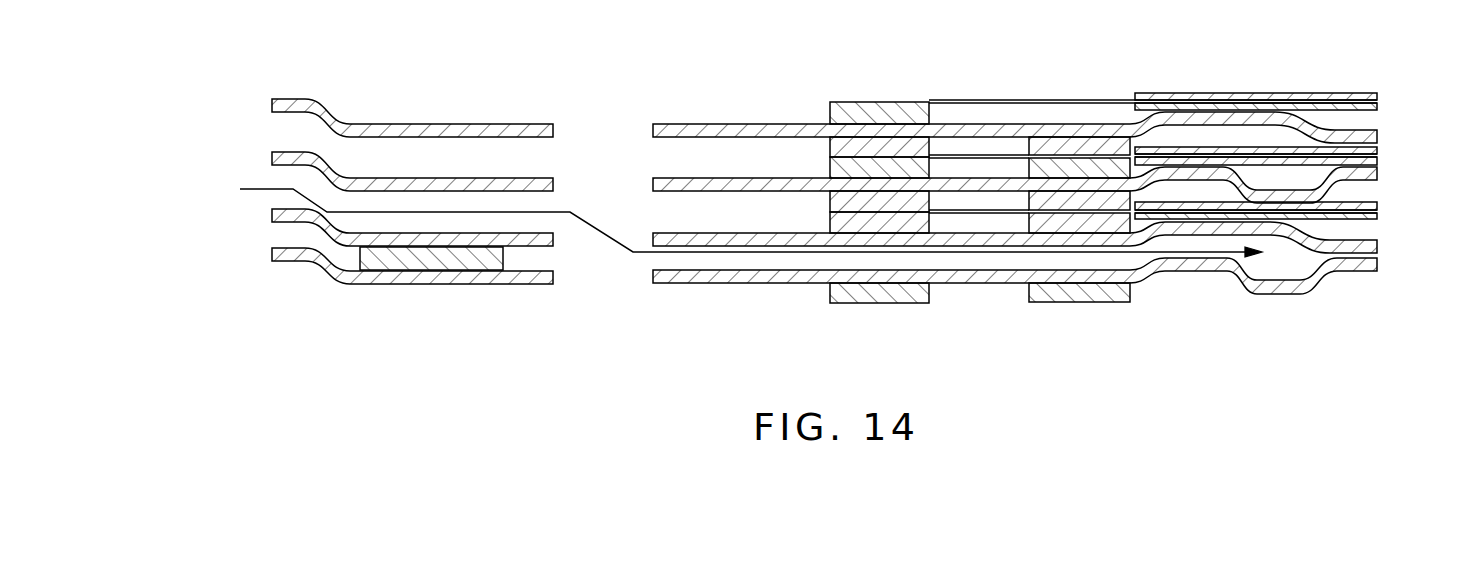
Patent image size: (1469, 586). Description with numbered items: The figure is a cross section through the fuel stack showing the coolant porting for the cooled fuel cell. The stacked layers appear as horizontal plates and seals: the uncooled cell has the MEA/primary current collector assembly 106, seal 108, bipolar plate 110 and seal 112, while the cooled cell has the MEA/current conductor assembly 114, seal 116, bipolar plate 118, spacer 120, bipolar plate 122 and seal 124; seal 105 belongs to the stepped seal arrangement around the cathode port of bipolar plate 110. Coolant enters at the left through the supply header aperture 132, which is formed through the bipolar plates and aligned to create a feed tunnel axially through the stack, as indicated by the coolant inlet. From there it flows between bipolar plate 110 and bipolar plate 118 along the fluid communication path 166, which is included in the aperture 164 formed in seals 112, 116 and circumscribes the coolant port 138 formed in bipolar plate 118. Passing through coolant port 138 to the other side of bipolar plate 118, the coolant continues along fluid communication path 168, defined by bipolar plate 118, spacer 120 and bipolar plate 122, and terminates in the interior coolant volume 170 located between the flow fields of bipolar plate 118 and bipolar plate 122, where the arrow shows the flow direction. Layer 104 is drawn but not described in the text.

The first plate 104 is at (1380, 135).
The seal 105 is at (879, 145).
The MEA/primary current collector assembly 106 is at (1380, 160).
The seal 108 is at (833, 168).
The bipolar plate 110 is at (1380, 178).
The seal 112 is at (927, 203).
The MEA/current conductor assembly 114 is at (1380, 212).
The seal 116 is at (830, 220).
The bipolar plate 118 is at (1380, 248).
The spacer 120 is at (430, 258).
The bipolar plate 122 is at (1380, 272).
The seal 124 is at (1105, 292).
The supply header aperture 132 is at (272, 158).
The coolant port 138 is at (580, 190).
The aperture 164 is at (466, 188).
The fluid communication path 166 is at (447, 213).
The fluid communication path 168 is at (983, 262).
The interior coolant volume 170 is at (1285, 270).